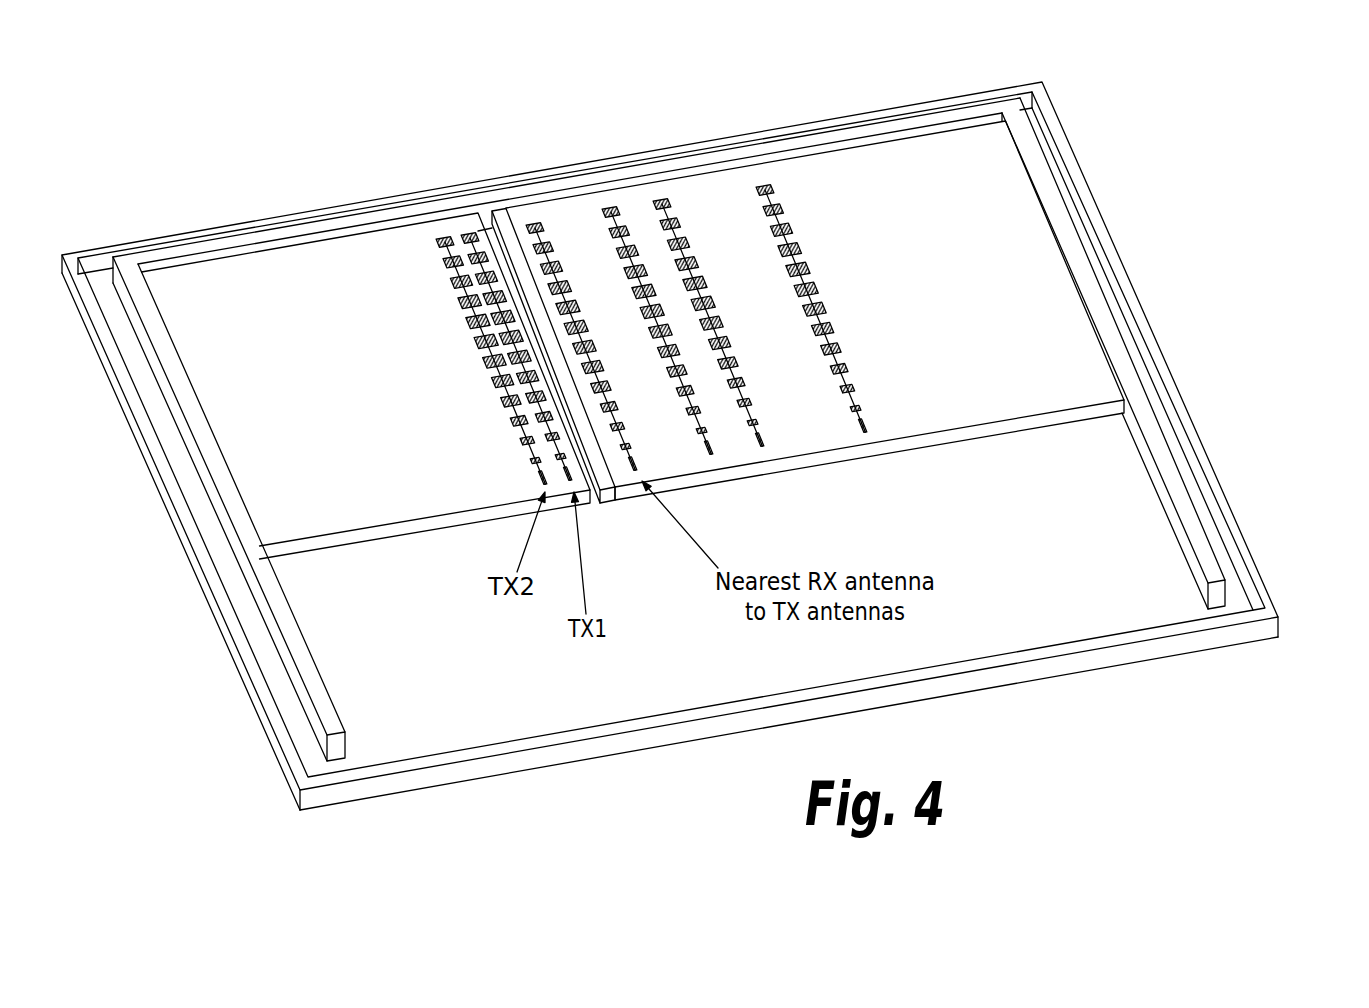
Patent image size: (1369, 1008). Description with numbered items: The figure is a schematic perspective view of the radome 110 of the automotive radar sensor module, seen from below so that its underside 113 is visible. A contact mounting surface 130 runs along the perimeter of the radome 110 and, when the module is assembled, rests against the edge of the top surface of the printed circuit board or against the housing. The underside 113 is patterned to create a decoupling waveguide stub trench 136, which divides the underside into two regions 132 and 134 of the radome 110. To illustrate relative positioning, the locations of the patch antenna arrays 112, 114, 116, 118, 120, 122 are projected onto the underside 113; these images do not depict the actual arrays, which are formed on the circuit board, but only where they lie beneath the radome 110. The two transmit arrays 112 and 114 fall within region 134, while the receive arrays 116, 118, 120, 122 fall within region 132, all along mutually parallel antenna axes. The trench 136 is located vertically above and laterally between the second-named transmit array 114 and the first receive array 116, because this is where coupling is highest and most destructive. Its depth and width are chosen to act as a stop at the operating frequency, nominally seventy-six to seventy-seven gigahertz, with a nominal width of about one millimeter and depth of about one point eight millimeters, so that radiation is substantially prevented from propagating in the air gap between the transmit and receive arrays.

The radome 110 is at (1072, 158).
The contact mounting surface 130 is at (1152, 440).
The waveguide stub trench 136 is at (493, 210).
The region of radome 134 is at (378, 383).
The region of radome 132 is at (958, 276).
The underside of radome 113 is at (460, 650).
The transmit antenna array TX2 112 is at (440, 257).
The transmit antenna array TX1 114 is at (480, 236).
The first receive antenna array 116 is at (537, 226).
The receive antenna array 118 is at (612, 210).
The receive antenna array 120 is at (731, 344).
The receive antenna array 122 is at (836, 334).